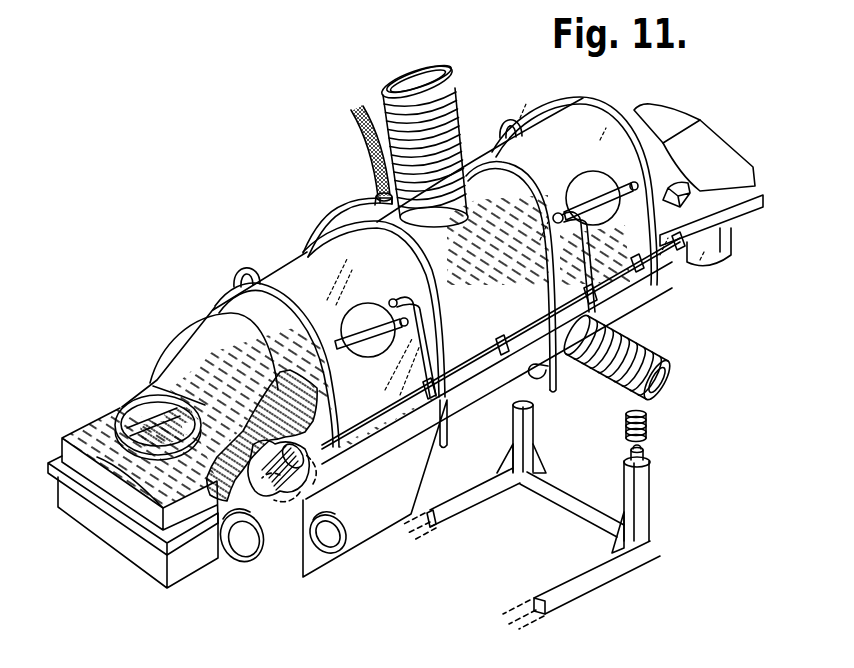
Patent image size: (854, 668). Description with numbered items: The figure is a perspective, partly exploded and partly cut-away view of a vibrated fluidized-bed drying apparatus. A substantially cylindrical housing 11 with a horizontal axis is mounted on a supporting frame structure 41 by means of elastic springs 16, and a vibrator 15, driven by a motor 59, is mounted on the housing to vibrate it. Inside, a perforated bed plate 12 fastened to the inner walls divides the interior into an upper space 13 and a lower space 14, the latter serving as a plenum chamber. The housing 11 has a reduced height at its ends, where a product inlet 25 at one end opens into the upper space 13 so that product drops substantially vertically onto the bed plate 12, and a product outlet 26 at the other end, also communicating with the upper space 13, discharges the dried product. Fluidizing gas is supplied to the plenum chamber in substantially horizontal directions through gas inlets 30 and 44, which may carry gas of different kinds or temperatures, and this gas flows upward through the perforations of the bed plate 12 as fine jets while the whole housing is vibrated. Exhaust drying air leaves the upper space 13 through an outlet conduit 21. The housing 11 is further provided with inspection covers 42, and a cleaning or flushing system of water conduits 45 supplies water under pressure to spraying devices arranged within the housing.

The housing 11 is at (295, 270).
The perforated bed plate 12 is at (190, 336).
The upper space 13 is at (317, 391).
The lower space 14 is at (307, 431).
The vibrator 15 is at (337, 545).
The springs 16 is at (648, 428).
The outlet conduit 21 is at (458, 84).
The product inlet 25 is at (133, 414).
The product outlet 26 is at (731, 252).
The gas inlet 30 is at (241, 563).
The supporting frame structure 41 is at (650, 501).
The inspection covers 42 is at (367, 307).
The gas inlet 44 is at (665, 358).
The water conduits 45 is at (365, 143).
The motor 59 is at (313, 484).